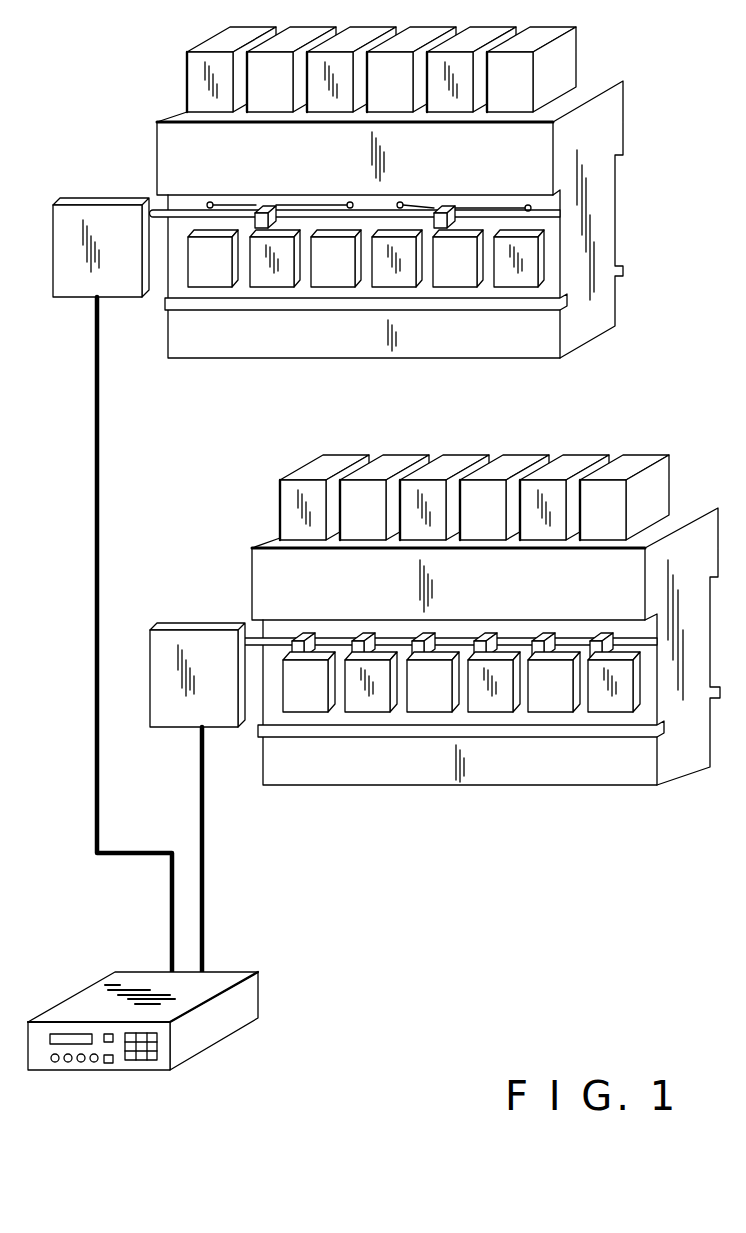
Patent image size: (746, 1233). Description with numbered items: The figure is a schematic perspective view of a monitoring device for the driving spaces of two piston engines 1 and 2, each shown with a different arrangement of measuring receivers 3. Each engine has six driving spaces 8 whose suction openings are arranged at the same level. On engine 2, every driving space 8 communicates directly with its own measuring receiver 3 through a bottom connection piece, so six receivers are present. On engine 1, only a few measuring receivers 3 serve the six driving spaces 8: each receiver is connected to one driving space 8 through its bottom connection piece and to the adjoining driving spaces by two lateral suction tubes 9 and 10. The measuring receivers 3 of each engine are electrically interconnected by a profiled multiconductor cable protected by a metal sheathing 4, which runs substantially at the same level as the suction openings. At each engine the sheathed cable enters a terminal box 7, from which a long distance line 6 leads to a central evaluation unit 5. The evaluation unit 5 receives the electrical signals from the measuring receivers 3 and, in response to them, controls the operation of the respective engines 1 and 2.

The piston engine 1 is at (610, 130).
The piston engine 2 is at (683, 742).
The measuring receiver 3 is at (257, 212).
The profiled casing or sheathing 4 is at (184, 213).
The central evaluation unit 5 is at (248, 995).
The long distance line 6 is at (93, 557).
The terminal box 7 is at (72, 288).
The driving space 8 is at (278, 276).
The suction tube 9 is at (228, 212).
The suction tube 10 is at (312, 212).